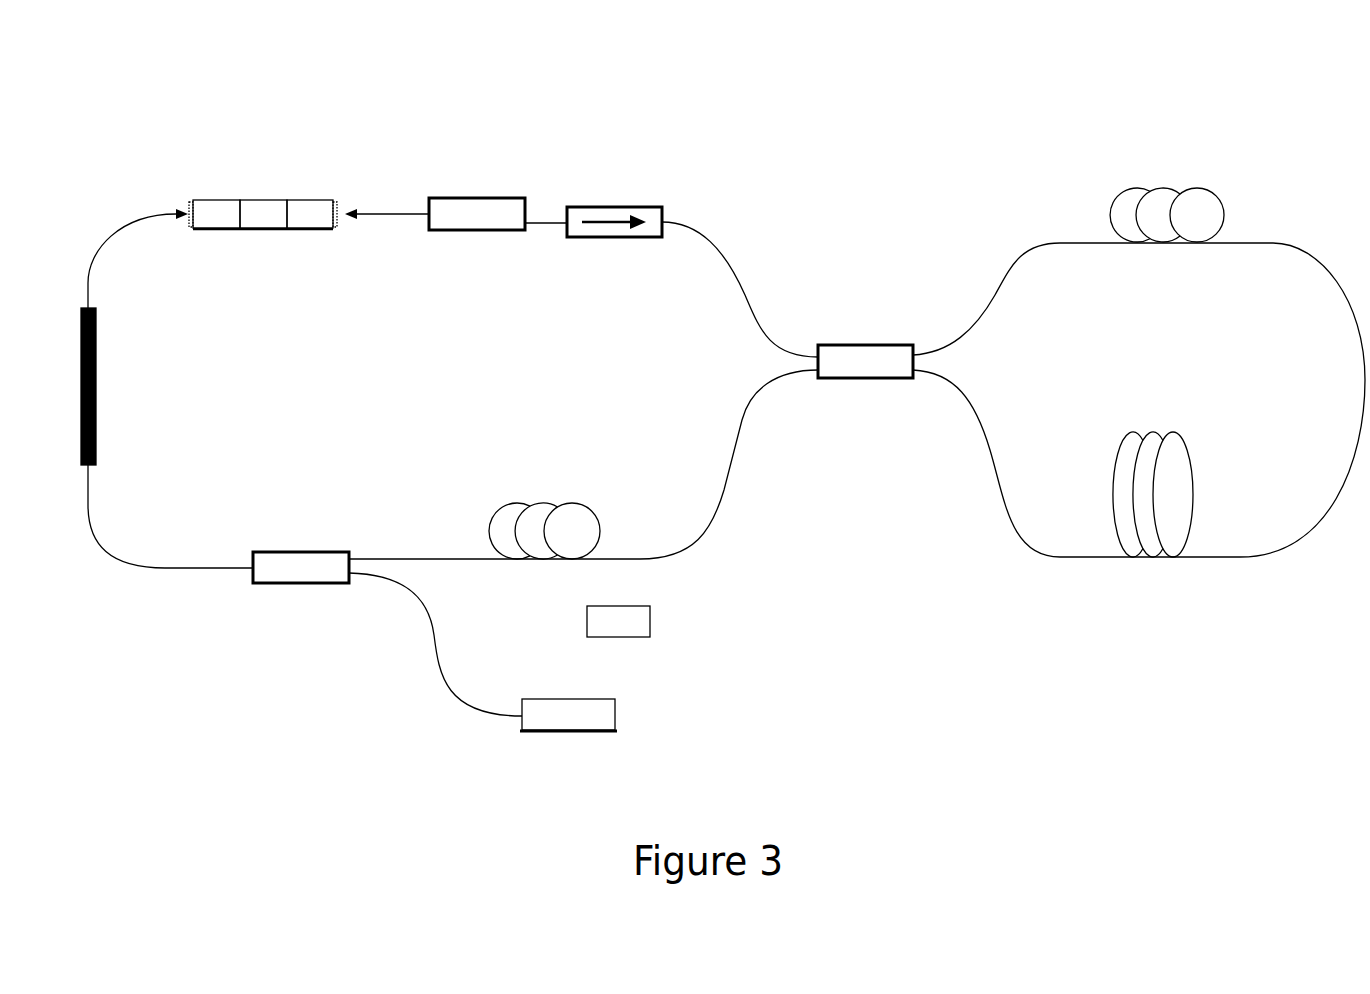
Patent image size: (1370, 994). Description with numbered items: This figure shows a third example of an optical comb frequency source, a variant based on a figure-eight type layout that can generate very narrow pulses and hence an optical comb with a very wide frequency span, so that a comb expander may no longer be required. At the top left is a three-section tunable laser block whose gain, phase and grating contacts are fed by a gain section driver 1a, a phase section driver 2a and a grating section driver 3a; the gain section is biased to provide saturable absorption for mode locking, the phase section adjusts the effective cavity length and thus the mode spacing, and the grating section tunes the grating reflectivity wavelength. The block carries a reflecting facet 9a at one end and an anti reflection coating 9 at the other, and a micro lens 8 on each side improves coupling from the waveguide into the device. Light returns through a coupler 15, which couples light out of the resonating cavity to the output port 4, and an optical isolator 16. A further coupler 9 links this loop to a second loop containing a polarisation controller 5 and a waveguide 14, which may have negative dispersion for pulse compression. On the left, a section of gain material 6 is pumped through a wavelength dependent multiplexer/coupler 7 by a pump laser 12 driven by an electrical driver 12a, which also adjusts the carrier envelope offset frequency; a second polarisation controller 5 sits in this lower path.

The gain section driver 1a is at (213, 188).
The phase section driver 2a is at (259, 188).
The grating section driver 3a is at (306, 188).
The output port 4 is at (527, 205).
The polarisation controller 5 is at (868, 357).
The section of gain material 6 is at (109, 379).
The wavelength dependent multiplexer/coupler 7 is at (301, 547).
The micro lens 8 is at (293, 225).
The anti reflection coating 9 is at (633, 276).
The reflecting facet 9a is at (176, 201).
The pump laser 12 is at (483, 652).
The electrical driver for pump laser 12a is at (564, 688).
The waveguide 14 is at (1165, 482).
The coupler 15 is at (477, 197).
The optical isolator 16 is at (614, 203).